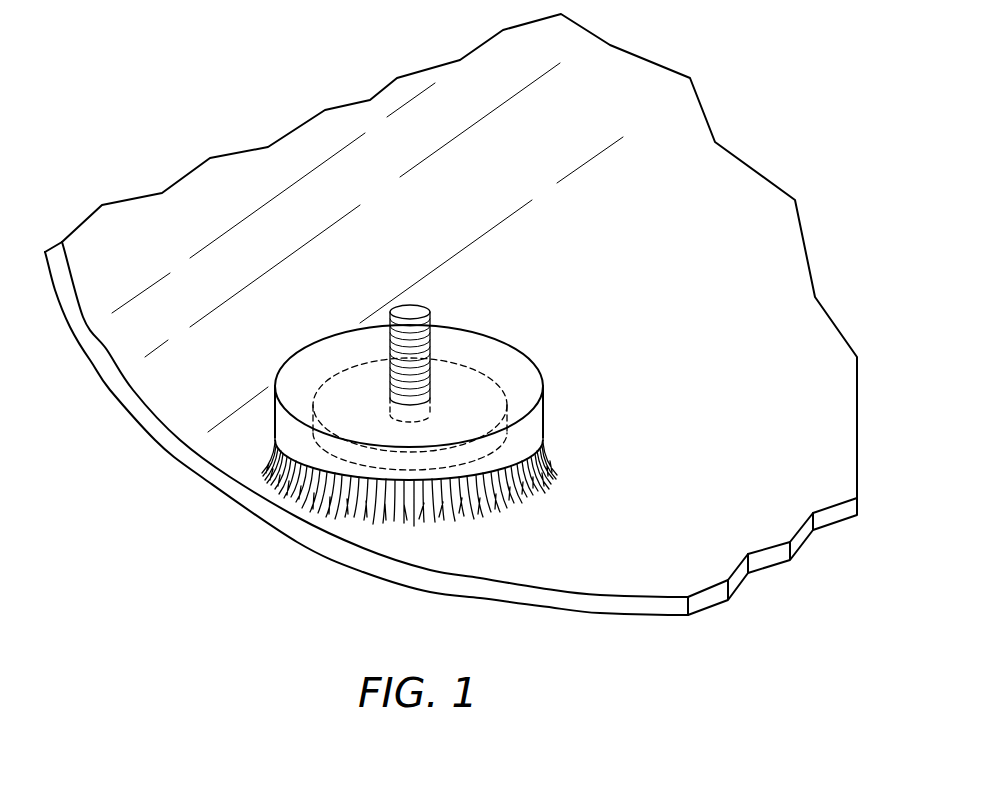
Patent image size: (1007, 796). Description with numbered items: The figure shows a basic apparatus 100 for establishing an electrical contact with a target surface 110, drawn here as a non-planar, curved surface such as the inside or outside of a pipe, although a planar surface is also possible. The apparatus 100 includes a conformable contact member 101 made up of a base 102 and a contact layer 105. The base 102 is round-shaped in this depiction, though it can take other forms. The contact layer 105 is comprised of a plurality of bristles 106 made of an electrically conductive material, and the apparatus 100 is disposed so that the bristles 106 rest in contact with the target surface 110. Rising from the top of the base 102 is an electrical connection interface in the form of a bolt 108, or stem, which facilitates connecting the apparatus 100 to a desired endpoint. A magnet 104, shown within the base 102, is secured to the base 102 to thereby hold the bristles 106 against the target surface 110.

The apparatus 100 is at (451, 335).
The conformable contact member 101 is at (418, 413).
The base 102 is at (508, 352).
The magnet 104 is at (507, 393).
The contact layer 105 is at (270, 453).
The bristles 106 is at (552, 462).
The bolt 108 is at (420, 310).
The target surface 110 is at (670, 575).